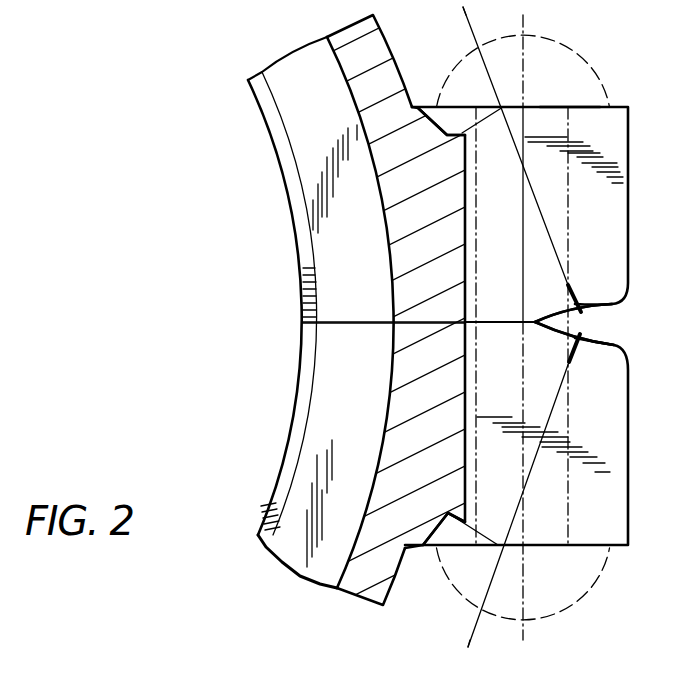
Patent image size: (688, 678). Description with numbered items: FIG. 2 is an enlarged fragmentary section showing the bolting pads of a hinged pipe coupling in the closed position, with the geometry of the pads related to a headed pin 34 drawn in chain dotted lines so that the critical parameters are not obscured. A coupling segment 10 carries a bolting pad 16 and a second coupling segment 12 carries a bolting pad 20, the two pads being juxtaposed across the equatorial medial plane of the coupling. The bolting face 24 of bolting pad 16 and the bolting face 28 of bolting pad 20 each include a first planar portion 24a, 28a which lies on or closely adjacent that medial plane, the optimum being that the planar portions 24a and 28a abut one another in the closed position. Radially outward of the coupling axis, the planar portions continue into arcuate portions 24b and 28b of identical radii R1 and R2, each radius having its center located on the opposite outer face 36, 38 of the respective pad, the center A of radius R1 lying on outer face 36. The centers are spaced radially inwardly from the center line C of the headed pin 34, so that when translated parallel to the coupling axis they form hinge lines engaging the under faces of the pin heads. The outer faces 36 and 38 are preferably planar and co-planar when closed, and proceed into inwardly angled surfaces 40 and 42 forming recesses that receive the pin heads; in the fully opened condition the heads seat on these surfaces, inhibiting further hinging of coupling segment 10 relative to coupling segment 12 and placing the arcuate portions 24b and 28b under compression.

The coupling segment 10 is at (375, 22).
The coupling segment 12 is at (407, 592).
The bolting pad 16 is at (613, 122).
The bolting pad 20 is at (617, 525).
The bolting face 24 is at (613, 302).
The first planar portion 24a is at (333, 318).
The arcuate portion 24b is at (591, 300).
The bolting face 28 is at (607, 345).
The first planar portion 28a is at (346, 328).
The arcuate portion 28b is at (588, 350).
The headed pin 34 is at (560, 27).
The outer face 36 is at (569, 107).
The outer face 38 is at (603, 553).
The angled surface 40 is at (455, 133).
The angled surface 42 is at (442, 550).
The radius R1 is at (543, 213).
The radius R2 is at (532, 458).
The center A is at (461, 7).
The center line C is at (523, 628).